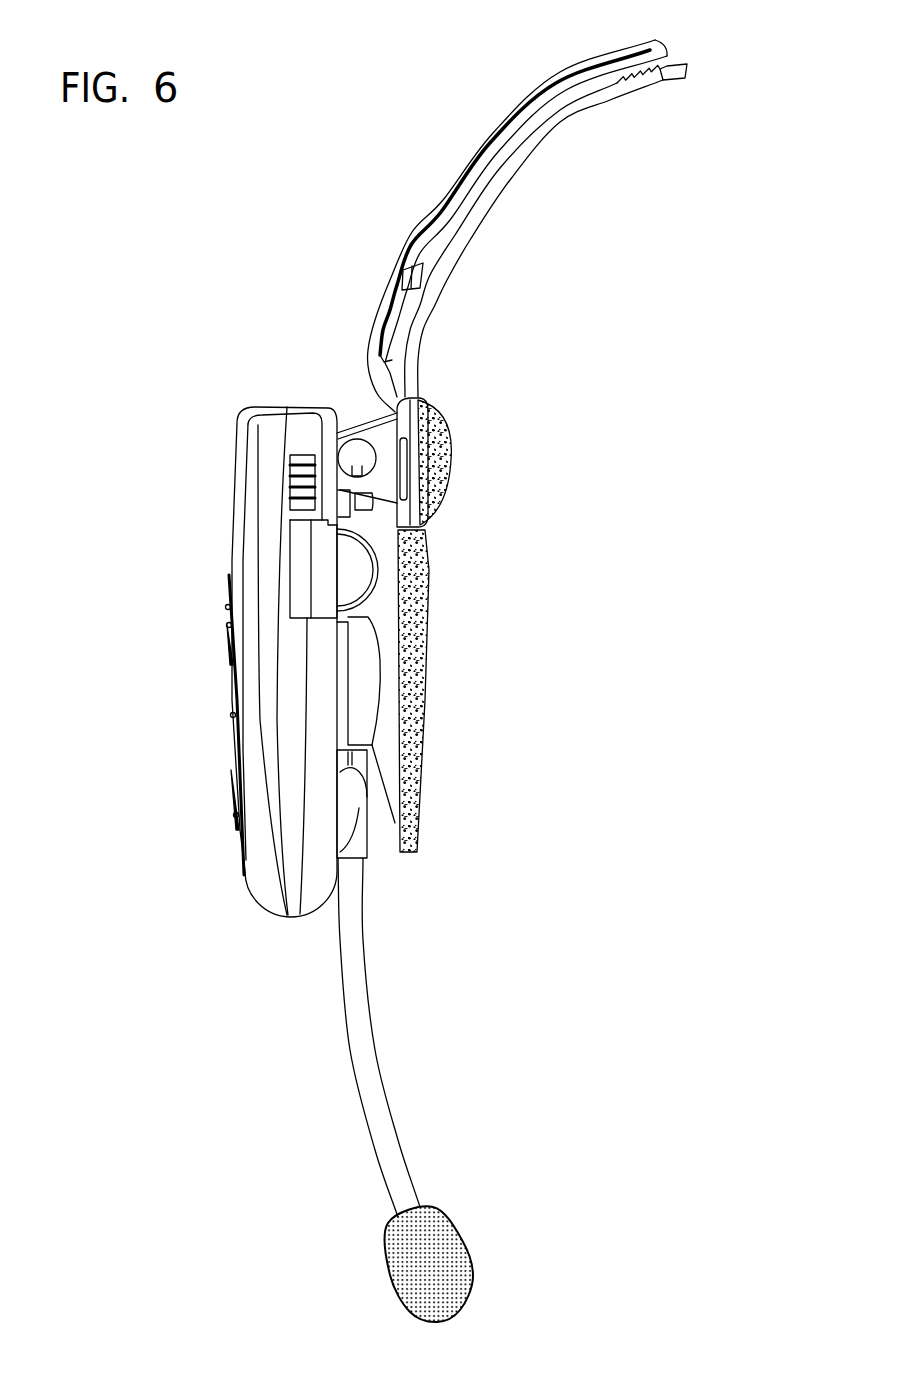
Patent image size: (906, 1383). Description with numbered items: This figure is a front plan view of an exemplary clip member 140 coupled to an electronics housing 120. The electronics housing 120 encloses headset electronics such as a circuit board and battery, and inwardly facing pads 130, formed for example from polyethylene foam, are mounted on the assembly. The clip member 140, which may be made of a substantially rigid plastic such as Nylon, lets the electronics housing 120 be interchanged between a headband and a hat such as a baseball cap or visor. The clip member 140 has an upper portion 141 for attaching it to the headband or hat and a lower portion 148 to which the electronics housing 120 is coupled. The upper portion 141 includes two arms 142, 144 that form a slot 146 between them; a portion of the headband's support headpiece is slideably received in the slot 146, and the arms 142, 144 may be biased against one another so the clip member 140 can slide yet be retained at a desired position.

The electronics housing 120 is at (212, 768).
The inwardly facing pads 130 is at (440, 487).
The clip member 140 is at (479, 210).
The upper portion 141 is at (488, 213).
The arm 142 is at (598, 203).
The arm 144 is at (610, 62).
The slot 146 is at (665, 63).
The lower portion 148 is at (382, 437).